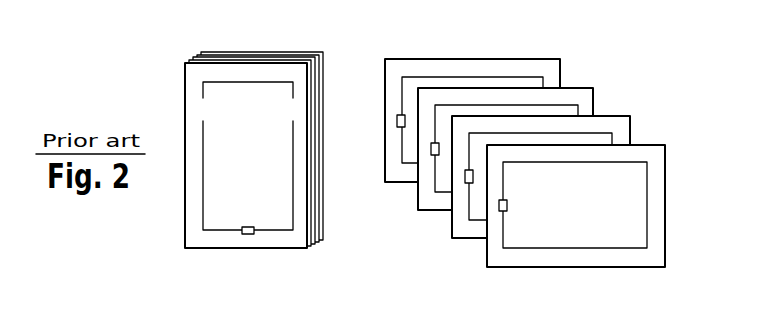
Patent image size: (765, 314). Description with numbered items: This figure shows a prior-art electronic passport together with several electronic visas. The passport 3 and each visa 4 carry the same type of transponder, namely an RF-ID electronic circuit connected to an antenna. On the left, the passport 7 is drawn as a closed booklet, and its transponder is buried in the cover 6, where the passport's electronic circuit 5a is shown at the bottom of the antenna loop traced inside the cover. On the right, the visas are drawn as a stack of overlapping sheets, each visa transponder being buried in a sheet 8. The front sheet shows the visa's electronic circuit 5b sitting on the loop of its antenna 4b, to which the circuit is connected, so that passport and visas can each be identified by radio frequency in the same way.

The passport 3 is at (212, 161).
The passport 7 is at (177, 54).
The cover 6 is at (197, 229).
The electronic circuit 5a is at (248, 235).
The visa 4 is at (525, 167).
The antenna 4b is at (544, 228).
The electronic circuit 5b is at (498, 206).
The sheet 8 is at (563, 240).